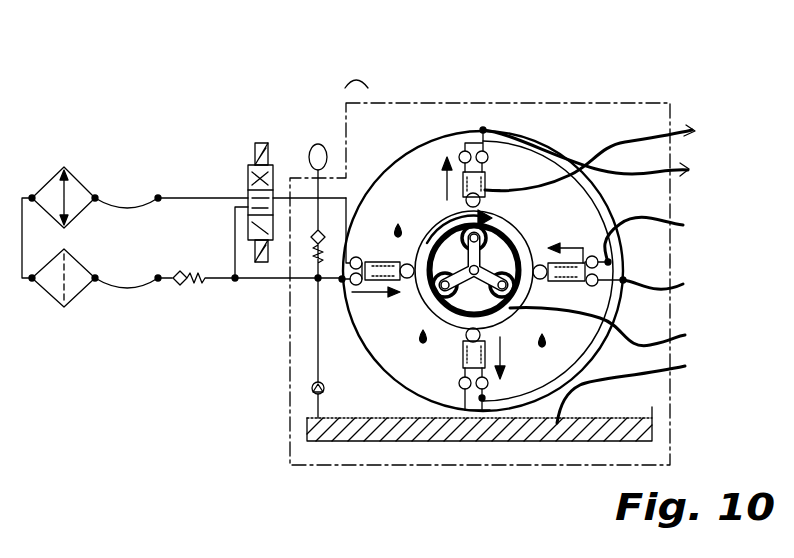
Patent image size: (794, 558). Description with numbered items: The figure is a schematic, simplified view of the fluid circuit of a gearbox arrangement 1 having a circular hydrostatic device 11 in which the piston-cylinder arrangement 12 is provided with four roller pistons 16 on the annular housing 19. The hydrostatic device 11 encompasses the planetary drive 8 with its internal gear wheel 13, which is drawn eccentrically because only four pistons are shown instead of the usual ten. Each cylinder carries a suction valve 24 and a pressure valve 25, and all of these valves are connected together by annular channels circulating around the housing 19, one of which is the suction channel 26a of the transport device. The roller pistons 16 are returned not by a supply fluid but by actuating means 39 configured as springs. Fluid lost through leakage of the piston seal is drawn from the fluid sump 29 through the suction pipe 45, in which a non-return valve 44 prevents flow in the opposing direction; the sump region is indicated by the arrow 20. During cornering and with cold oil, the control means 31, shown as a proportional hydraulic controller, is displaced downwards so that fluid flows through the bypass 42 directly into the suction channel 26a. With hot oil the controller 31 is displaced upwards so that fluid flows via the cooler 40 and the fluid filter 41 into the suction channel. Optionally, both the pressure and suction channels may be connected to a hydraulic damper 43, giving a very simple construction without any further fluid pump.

The gearbox arrangement 1 is at (170, 72).
The planetary drive 8 is at (414, 372).
The hydrostatic device 11 is at (540, 56).
The piston-cylinder arrangement 12 is at (705, 108).
The internal gear wheel 13 is at (626, 331).
The roller piston 16 is at (598, 166).
The annular housing 19 is at (423, 160).
The oil sump region 20 is at (383, 398).
The suction valve 24 is at (635, 250).
The pressure valve 25 is at (683, 287).
The suction channel 26a is at (352, 330).
The fluid sump 29 is at (520, 399).
The control means 31 is at (266, 145).
The actuating means 39 is at (611, 170).
The cooler 40 is at (75, 180).
The fluid filter 41 is at (72, 284).
The bypass 42 is at (235, 250).
The hydraulic damper 43 is at (318, 144).
The non-return valve 44 is at (311, 388).
The suction pipe 45 is at (318, 412).